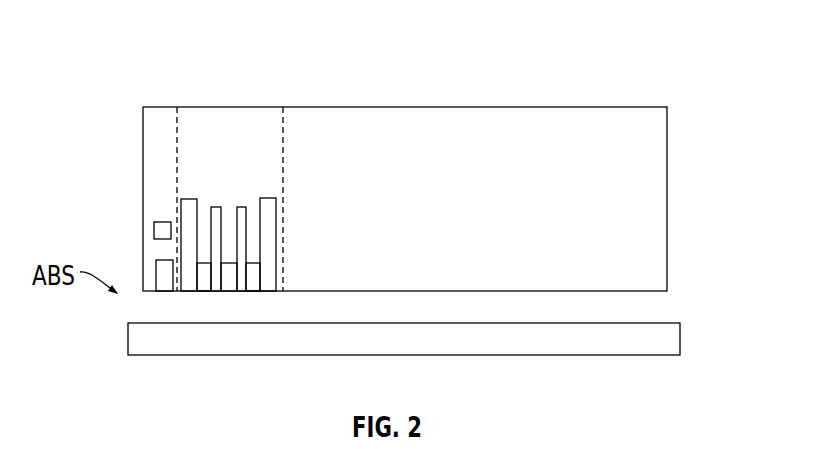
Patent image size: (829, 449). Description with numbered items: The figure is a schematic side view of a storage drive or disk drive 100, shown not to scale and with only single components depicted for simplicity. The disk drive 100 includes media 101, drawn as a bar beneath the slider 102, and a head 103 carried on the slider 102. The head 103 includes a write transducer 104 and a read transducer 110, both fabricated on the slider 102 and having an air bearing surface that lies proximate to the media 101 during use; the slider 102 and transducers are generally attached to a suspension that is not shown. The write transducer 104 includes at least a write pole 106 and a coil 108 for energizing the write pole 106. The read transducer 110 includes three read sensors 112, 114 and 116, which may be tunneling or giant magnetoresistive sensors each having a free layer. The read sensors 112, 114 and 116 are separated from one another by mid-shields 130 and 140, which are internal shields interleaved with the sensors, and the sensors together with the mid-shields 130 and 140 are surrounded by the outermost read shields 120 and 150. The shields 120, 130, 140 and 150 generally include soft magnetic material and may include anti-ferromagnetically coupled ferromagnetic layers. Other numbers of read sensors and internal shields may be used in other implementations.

The disk drive 100 is at (103, 40).
The media 101 is at (128, 338).
The slider 102 is at (667, 170).
The head 103 is at (110, 175).
The write transducer 104 is at (143, 133).
The write pole 106 is at (156, 273).
The coil 108 is at (154, 230).
The read transducer 110 is at (283, 148).
The read sensor 112 is at (205, 291).
The read sensor 114 is at (227, 263).
The read sensor 116 is at (253, 291).
The read shield 120 is at (190, 199).
The mid-shield 130 is at (216, 207).
The mid-shield 140 is at (250, 242).
The read shield 150 is at (277, 203).